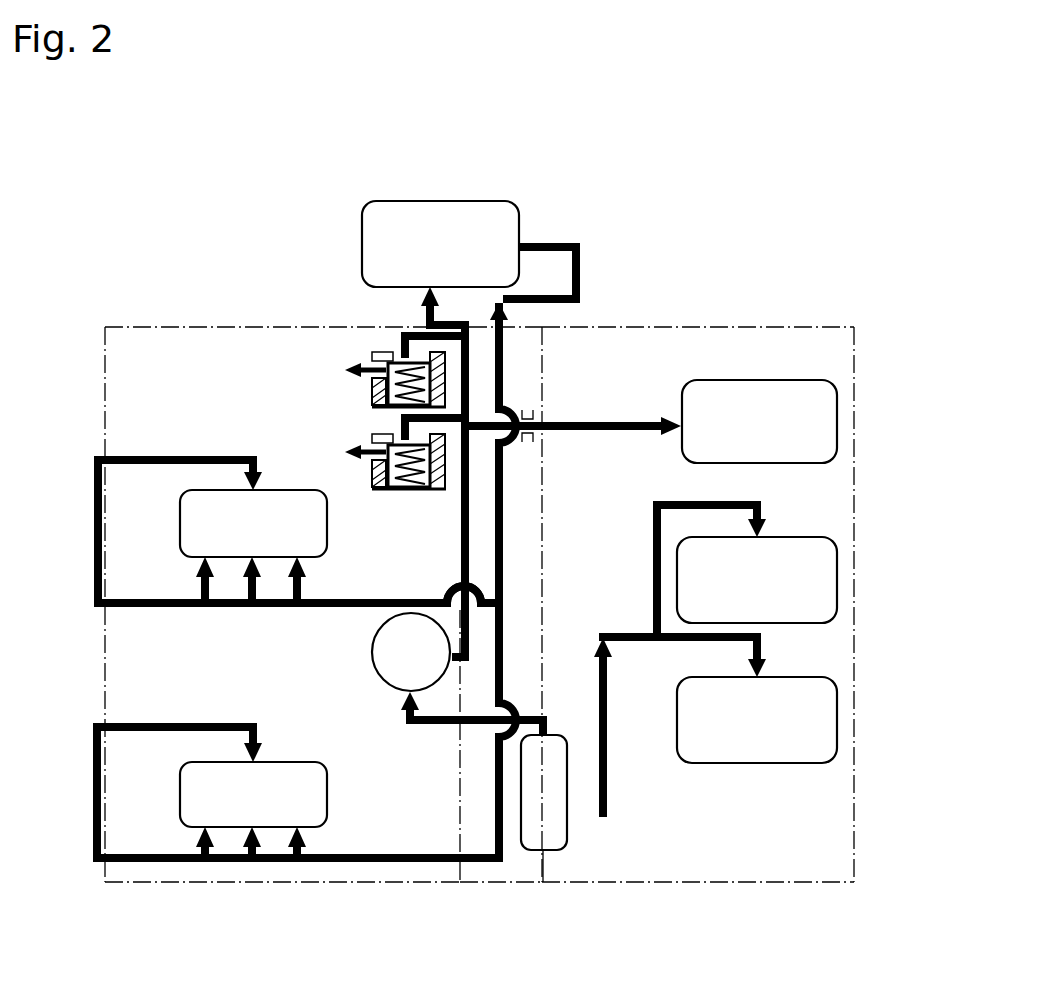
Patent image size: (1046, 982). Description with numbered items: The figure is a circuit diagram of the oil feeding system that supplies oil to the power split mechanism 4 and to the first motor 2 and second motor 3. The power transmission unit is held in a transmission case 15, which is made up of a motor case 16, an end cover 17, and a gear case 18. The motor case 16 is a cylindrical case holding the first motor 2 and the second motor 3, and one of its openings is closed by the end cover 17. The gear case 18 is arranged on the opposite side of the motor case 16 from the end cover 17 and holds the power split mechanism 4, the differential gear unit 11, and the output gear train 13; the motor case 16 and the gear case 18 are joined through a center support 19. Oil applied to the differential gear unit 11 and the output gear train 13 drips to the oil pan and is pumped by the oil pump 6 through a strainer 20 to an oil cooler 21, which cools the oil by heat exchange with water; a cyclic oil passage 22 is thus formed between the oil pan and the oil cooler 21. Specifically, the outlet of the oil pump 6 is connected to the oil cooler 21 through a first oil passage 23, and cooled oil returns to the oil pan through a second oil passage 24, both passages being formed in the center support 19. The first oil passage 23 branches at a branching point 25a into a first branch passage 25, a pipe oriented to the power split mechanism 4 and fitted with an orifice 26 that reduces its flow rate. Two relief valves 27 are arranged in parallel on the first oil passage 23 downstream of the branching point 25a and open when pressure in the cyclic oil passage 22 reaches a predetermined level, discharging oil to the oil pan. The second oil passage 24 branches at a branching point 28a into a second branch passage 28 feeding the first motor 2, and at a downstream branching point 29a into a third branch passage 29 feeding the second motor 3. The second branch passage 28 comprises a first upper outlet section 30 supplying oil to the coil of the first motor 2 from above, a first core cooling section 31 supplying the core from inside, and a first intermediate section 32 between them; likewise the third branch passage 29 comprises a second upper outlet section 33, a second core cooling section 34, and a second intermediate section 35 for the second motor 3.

The first motor 2 is at (180, 522).
The second motor 3 is at (180, 802).
The power split mechanism 4 is at (838, 425).
The oil pump 6 is at (372, 656).
The differential gear unit 11 is at (838, 715).
The output gear train 13 is at (838, 585).
The transmission case 15 is at (694, 327).
The motor case 16 is at (183, 325).
The end cover 17 is at (103, 403).
The gear case 18 is at (855, 350).
The center support 19 is at (513, 872).
The strainer 20 is at (568, 838).
The oil cooler 21 is at (432, 200).
The cyclic oil passage 22 is at (557, 237).
The first oil passage 23 is at (504, 518).
The second oil passage 24 is at (581, 273).
The first branch passage 25 is at (626, 421).
The branching point 25a is at (468, 421).
The orifice 26 is at (537, 415).
The relief valves 27 is at (370, 342).
The second branch passage 28 is at (311, 607).
The branching point 28a is at (503, 603).
The third branch passage 29 is at (368, 854).
The branching point 29a is at (478, 863).
The first upper outlet section 30 is at (233, 608).
The first core cooling section 31 is at (265, 476).
The first intermediate section 32 is at (93, 521).
The second upper outlet section 33 is at (233, 862).
The second core cooling section 34 is at (262, 733).
The second intermediate section 35 is at (93, 785).